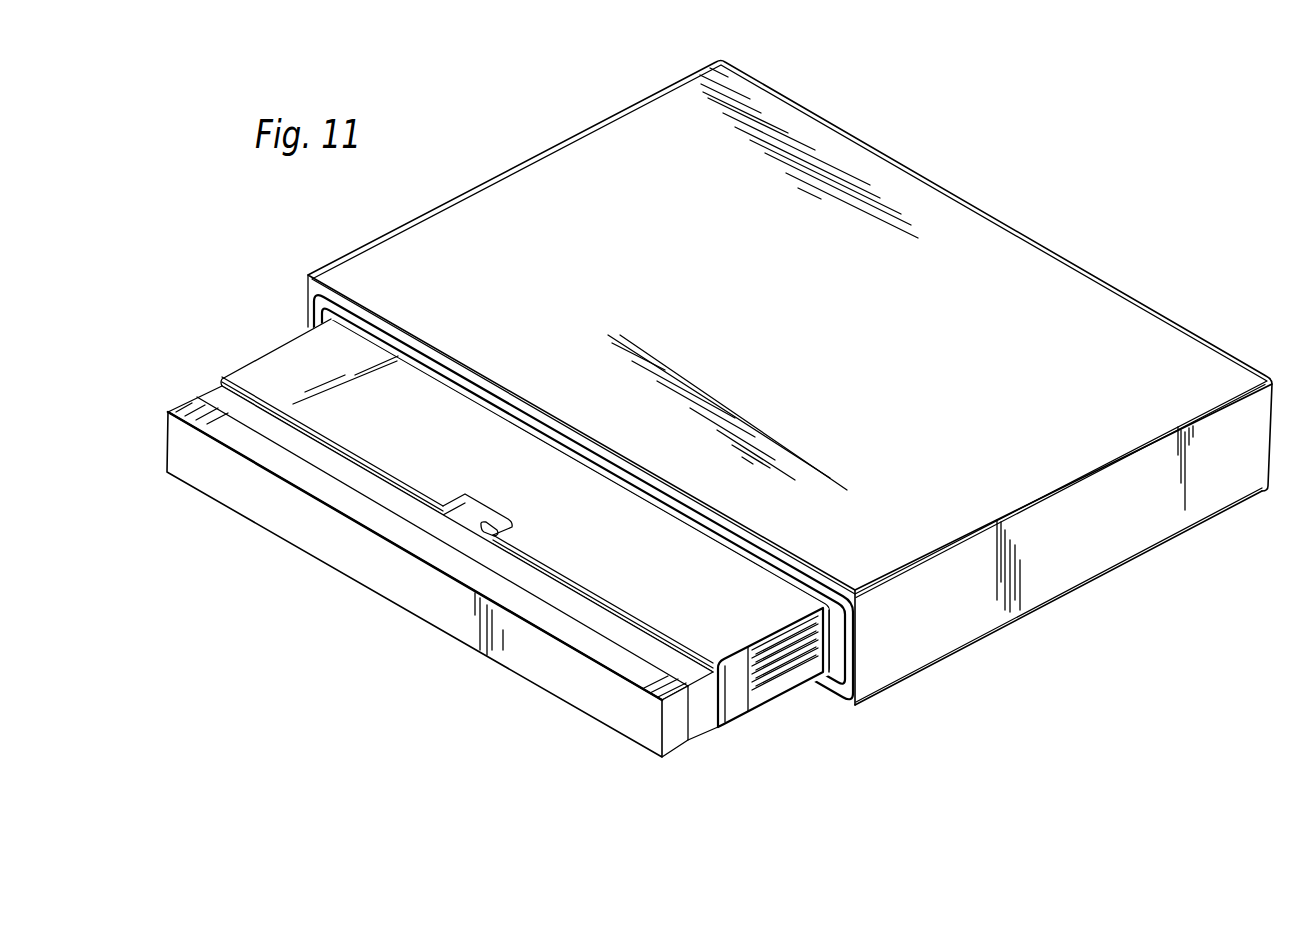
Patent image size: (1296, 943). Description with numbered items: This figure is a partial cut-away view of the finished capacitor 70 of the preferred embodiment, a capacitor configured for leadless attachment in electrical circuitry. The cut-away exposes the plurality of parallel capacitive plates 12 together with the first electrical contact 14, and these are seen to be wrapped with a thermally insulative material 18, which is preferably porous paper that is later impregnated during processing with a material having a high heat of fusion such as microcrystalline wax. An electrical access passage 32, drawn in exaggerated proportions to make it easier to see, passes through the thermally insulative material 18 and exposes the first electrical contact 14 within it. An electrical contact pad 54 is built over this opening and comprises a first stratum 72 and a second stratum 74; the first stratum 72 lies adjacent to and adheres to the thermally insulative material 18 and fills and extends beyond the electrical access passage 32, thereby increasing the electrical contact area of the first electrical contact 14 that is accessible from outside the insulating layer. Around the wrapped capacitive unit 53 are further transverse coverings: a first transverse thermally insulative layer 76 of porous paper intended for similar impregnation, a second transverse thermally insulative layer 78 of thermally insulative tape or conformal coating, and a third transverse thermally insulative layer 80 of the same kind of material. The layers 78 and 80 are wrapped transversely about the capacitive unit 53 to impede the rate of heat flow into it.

The parallel capacitive plates 12 is at (780, 677).
The first electrical contact 14 is at (493, 537).
The thermally insulative material 18 is at (804, 688).
The electrical access passage 32 is at (447, 507).
The capacitive unit 53 is at (767, 716).
The electrical contact pad 54 is at (676, 761).
The finished capacitor 70 is at (1037, 200).
The first stratum 72 is at (702, 738).
The second stratum 74 is at (628, 737).
The first transverse thermally insulative layer 76 is at (832, 667).
The second transverse thermally insulative layer 78 is at (840, 657).
The third transverse thermally insulative layer 80 is at (982, 603).